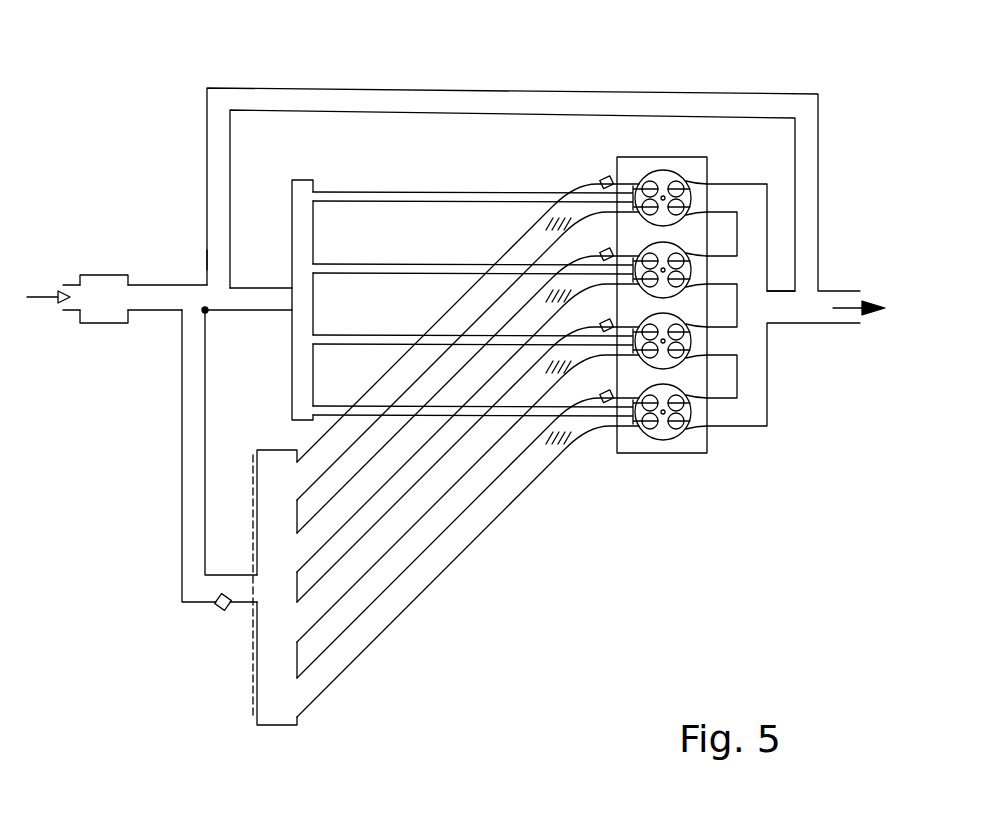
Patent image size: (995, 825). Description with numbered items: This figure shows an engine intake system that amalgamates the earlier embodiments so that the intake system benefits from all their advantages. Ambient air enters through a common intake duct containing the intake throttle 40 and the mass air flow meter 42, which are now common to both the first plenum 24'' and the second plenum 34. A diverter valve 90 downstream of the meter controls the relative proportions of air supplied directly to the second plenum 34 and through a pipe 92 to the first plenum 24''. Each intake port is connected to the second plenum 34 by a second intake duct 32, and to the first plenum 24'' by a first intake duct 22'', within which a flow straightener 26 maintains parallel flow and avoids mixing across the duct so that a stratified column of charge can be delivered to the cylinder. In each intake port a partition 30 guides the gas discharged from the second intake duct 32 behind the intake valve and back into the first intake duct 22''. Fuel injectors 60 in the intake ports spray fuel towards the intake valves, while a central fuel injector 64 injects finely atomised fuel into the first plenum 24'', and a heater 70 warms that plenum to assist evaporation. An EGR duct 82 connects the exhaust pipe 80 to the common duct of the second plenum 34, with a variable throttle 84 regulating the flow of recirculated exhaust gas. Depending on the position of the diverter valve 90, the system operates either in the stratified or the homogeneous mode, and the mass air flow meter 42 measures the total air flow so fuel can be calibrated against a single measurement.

The first intake ducts 22'' is at (468, 450).
The first plenum 24'' is at (251, 620).
The flow straightener 26 is at (573, 438).
The partition 30 is at (637, 185).
The second intake duct 32 is at (572, 197).
The second plenum 34 is at (300, 195).
The throttle valve 40 is at (160, 296).
The mass air flow meter 42 is at (112, 292).
The fuel injectors 60 is at (606, 180).
The central fuel injector 64 is at (217, 608).
The heater 70 is at (252, 662).
The exhaust pipe 80 is at (787, 312).
The EGR duct 82 is at (338, 100).
The variable throttle 84 is at (218, 257).
The diverter valve 90 is at (200, 305).
The pipe 92 is at (192, 450).